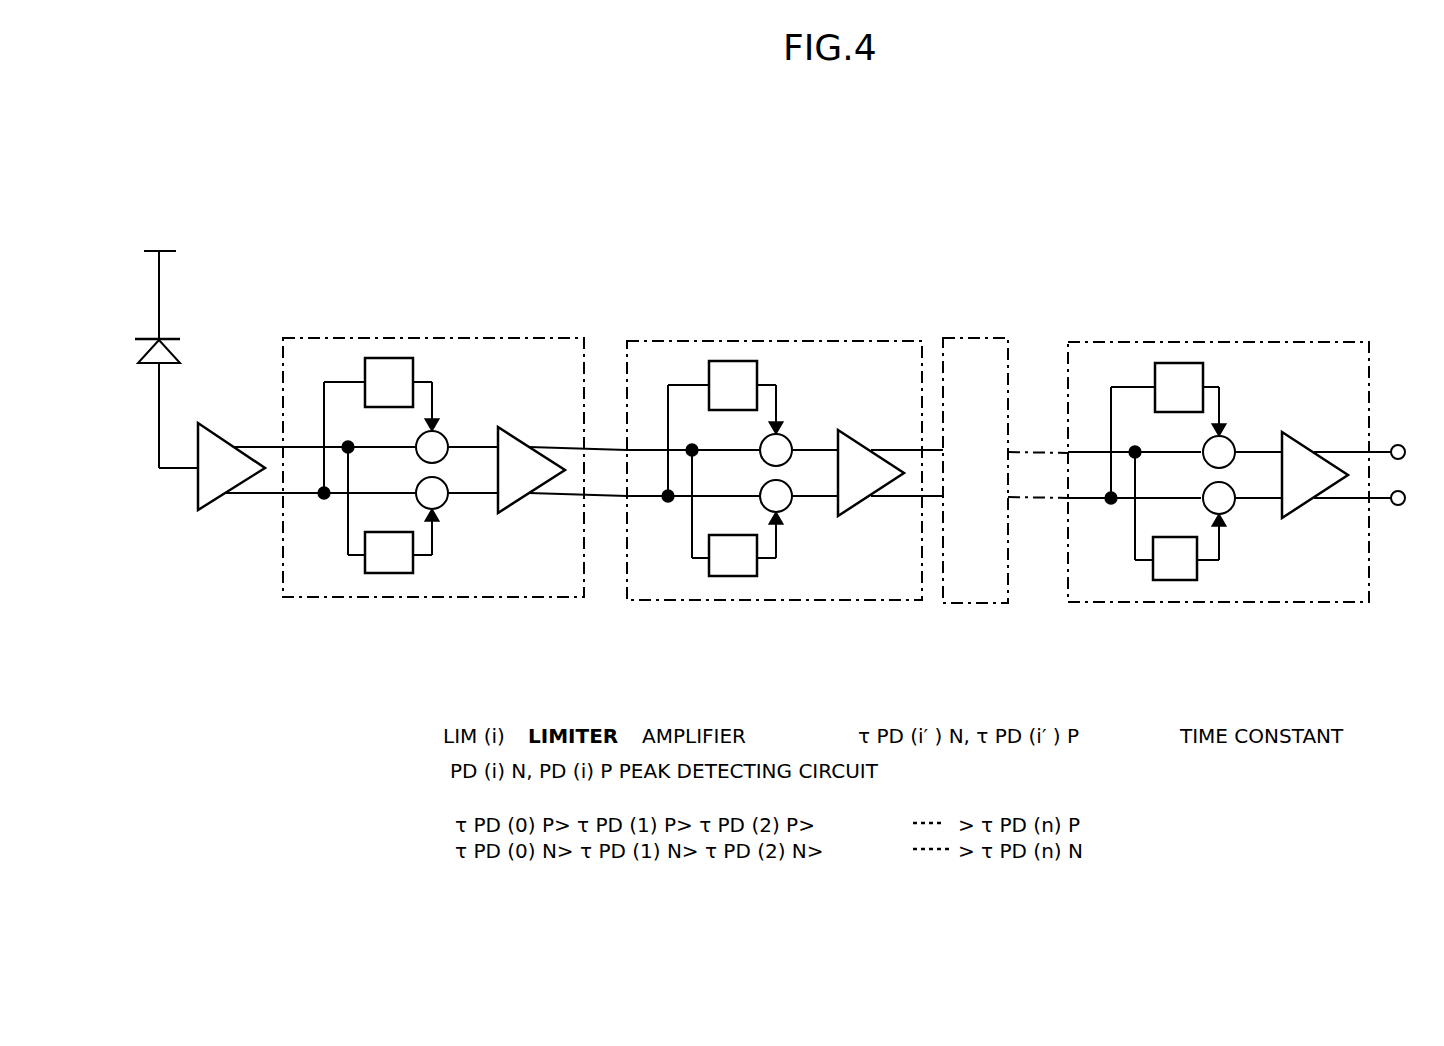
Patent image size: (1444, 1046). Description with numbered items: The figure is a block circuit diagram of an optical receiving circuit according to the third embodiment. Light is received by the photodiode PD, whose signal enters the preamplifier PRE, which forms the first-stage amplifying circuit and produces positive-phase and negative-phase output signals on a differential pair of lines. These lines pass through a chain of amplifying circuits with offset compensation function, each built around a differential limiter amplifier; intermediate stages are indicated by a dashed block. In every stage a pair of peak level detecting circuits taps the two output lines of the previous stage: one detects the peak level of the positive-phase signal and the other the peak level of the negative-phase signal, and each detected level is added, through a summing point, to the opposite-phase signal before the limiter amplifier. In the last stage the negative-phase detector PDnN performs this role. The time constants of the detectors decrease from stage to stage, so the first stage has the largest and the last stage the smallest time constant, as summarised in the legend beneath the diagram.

The photodiode PD is at (186, 348).
The preamplifier PRE is at (214, 478).
The peak level detecting circuit PDnN is at (1205, 397).